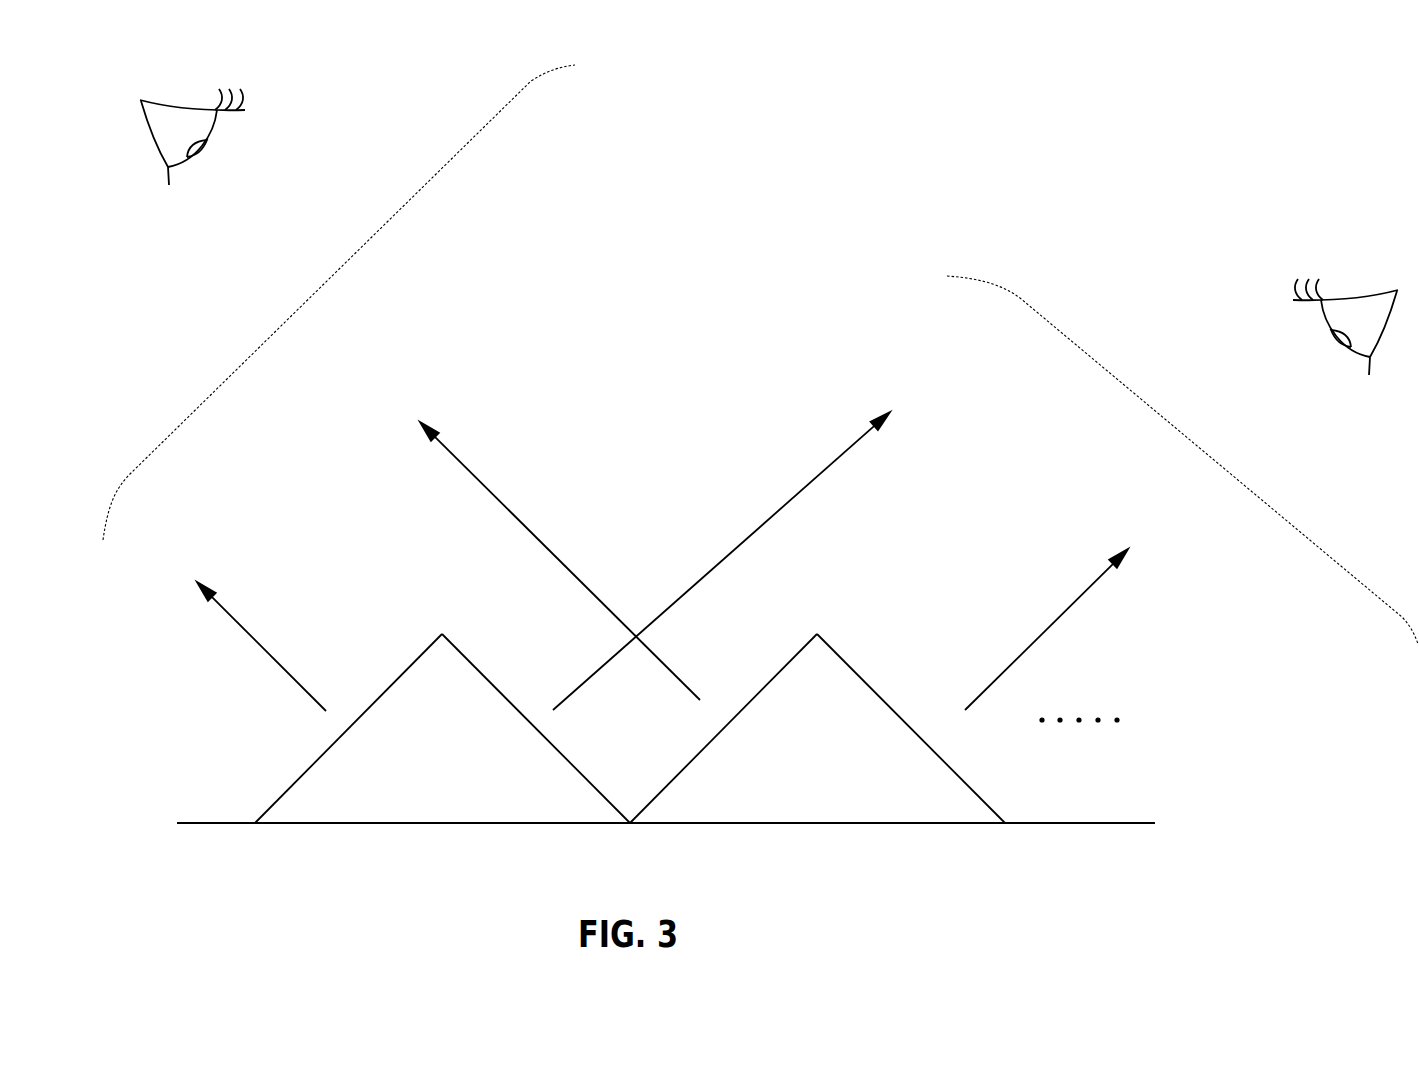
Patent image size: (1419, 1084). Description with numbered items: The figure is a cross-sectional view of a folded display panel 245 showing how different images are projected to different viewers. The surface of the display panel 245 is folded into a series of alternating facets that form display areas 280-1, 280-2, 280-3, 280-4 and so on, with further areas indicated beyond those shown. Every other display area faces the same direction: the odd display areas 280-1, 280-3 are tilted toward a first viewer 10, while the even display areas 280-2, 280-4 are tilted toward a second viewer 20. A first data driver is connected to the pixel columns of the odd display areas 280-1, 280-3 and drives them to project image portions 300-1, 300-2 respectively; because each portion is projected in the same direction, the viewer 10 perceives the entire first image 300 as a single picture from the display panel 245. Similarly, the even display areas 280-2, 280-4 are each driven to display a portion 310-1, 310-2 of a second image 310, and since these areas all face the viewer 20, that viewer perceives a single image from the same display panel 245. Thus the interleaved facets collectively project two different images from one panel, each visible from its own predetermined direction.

The viewer 10 is at (191, 115).
The viewer 20 is at (1345, 310).
The display panel 245 is at (267, 812).
The display area 280-1 is at (335, 742).
The display area 280-2 is at (488, 677).
The display area 280-3 is at (700, 747).
The display area 280-4 is at (963, 782).
The image 300 is at (320, 282).
The image portion 300-1 is at (238, 618).
The image portion 300-2 is at (542, 537).
The image 310 is at (1209, 457).
The image portion 310-1 is at (721, 539).
The image portion 310-2 is at (1046, 608).